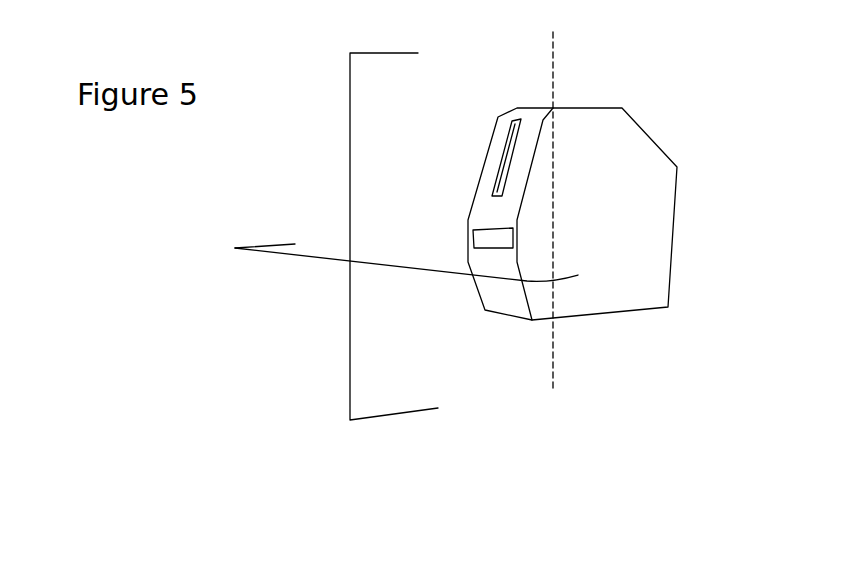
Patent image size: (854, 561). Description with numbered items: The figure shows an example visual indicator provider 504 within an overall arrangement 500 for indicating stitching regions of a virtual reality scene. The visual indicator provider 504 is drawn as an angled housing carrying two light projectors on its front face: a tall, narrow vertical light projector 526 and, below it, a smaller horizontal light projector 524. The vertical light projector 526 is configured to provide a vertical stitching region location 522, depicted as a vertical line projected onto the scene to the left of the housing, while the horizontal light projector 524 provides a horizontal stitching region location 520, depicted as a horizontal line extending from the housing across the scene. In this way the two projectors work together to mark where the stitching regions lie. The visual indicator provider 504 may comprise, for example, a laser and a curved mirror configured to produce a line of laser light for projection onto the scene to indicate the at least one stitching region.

The assembly / overall arrangement 500 is at (680, 90).
The visual indicator provider 504 is at (626, 214).
The horizontal stitching region location 520 is at (288, 254).
The vertical stitching region location 522 is at (349, 353).
The horizontal light projector 524 is at (474, 241).
The vertical light projector 526 is at (495, 188).